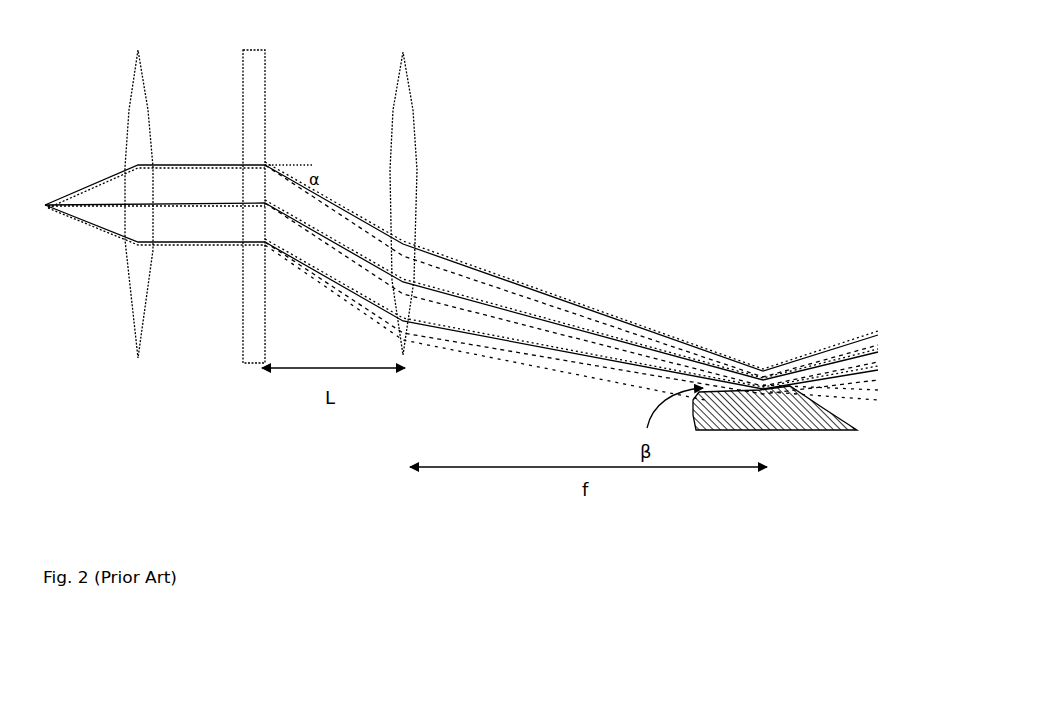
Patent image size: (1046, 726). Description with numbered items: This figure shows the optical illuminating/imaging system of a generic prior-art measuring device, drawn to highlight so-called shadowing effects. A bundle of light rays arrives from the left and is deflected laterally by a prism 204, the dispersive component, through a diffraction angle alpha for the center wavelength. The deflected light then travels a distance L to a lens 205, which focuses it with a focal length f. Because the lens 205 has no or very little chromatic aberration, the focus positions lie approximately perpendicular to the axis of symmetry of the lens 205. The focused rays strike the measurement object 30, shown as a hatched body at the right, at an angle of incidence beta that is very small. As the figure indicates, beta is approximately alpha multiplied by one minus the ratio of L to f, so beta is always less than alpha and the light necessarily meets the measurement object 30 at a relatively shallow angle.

The prism 204 is at (247, 90).
The lens 205 is at (413, 130).
The measurement object 30 is at (808, 424).